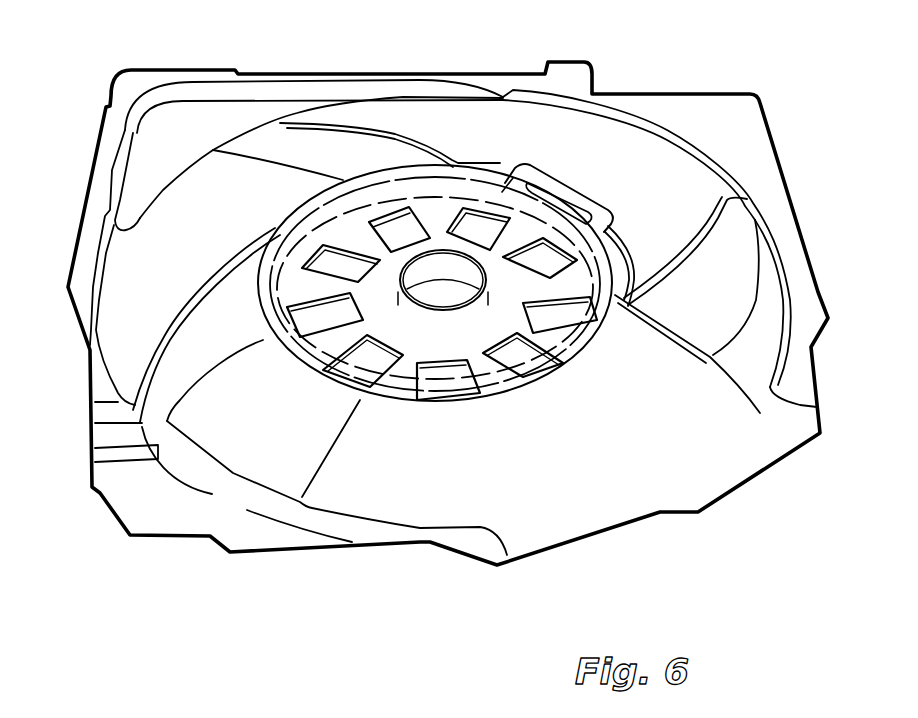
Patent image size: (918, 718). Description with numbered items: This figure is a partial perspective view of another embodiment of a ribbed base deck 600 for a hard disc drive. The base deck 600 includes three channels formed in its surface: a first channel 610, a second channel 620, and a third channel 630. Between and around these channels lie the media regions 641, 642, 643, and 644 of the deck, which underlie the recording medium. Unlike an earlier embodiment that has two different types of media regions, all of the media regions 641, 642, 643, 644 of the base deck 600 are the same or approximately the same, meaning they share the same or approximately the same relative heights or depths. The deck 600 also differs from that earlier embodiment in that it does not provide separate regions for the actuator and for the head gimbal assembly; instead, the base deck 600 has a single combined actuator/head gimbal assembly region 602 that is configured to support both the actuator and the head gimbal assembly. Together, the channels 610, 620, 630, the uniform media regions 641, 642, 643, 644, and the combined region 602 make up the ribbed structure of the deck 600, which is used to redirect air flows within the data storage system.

The ribbed base deck 600 is at (696, 536).
The combined actuator/head gimbal assembly region 602 is at (593, 430).
The first channel 610 is at (732, 273).
The second channel 620 is at (323, 150).
The third channel 630 is at (188, 358).
The media region 641 is at (753, 347).
The media region 642 is at (568, 148).
The media region 643 is at (175, 235).
The media region 644 is at (317, 380).